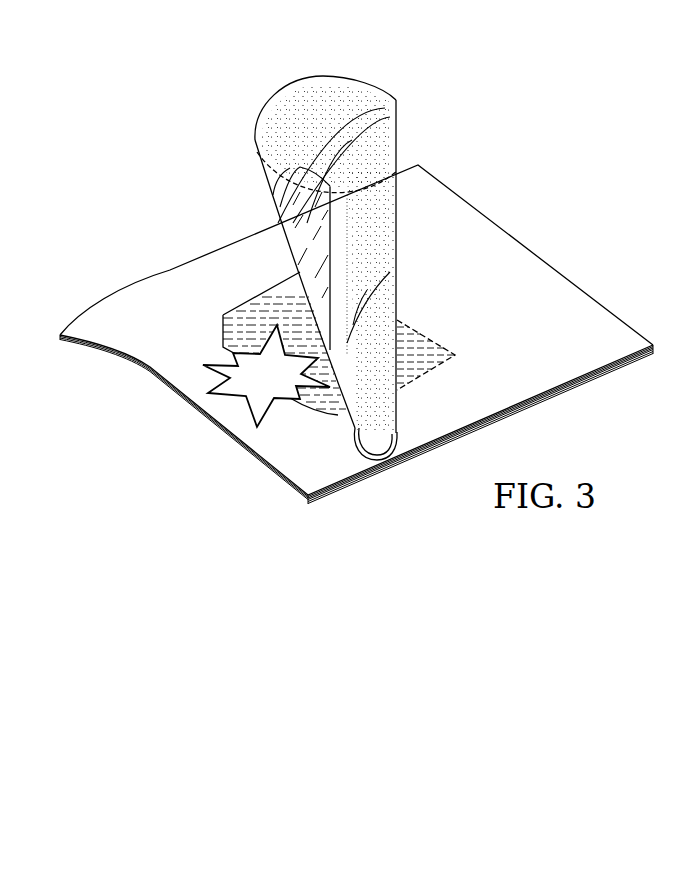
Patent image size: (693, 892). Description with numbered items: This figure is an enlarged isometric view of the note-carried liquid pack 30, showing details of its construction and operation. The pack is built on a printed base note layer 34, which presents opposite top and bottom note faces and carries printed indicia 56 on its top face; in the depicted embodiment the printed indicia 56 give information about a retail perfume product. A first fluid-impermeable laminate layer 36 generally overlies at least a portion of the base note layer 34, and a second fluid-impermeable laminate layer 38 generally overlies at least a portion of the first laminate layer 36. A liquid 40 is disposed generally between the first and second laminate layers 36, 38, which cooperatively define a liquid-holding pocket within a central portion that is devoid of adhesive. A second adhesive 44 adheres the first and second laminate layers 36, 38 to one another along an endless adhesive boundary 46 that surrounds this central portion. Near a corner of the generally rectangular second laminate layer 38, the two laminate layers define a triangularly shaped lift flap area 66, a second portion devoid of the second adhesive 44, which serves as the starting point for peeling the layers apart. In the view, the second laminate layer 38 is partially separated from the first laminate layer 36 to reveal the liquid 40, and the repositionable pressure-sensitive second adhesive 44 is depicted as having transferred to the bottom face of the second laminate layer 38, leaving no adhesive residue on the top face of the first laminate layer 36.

The liquid pack 30 is at (537, 191).
The printed base note layer 34 is at (247, 460).
The first fluid-impermeable laminate layer 36 is at (171, 300).
The second fluid-impermeable laminate layer 38 is at (328, 243).
The liquid 40 is at (258, 325).
The second adhesive 44 is at (292, 102).
The endless adhesive boundary 46 is at (283, 157).
The printed indicia 56 is at (552, 306).
The lift flap area 66 is at (383, 108).